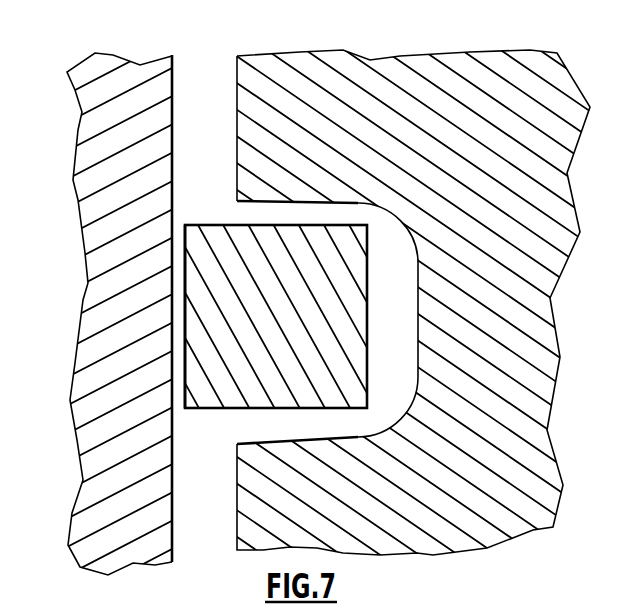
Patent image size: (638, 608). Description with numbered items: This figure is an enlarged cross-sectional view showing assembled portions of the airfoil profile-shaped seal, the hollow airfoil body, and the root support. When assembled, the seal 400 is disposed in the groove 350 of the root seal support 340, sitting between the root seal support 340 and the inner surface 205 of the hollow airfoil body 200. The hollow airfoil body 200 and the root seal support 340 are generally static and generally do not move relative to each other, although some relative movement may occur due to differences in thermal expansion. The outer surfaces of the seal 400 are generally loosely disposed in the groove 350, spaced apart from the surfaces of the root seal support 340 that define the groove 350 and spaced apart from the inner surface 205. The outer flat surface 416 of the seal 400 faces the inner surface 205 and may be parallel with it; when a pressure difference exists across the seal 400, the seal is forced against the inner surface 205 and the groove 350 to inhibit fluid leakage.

The hollow airfoil body 200 is at (87, 70).
The inner surface 205 is at (173, 107).
The root seal support 340 is at (443, 80).
The groove 350 is at (265, 203).
The seal 400 is at (213, 409).
The outer flat surface 416 is at (185, 328).